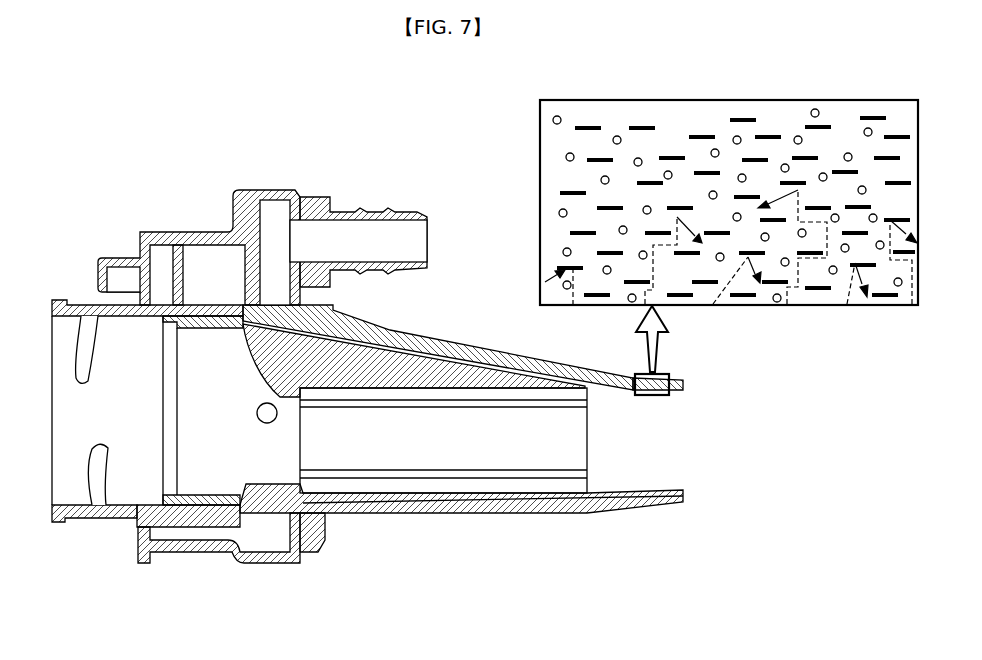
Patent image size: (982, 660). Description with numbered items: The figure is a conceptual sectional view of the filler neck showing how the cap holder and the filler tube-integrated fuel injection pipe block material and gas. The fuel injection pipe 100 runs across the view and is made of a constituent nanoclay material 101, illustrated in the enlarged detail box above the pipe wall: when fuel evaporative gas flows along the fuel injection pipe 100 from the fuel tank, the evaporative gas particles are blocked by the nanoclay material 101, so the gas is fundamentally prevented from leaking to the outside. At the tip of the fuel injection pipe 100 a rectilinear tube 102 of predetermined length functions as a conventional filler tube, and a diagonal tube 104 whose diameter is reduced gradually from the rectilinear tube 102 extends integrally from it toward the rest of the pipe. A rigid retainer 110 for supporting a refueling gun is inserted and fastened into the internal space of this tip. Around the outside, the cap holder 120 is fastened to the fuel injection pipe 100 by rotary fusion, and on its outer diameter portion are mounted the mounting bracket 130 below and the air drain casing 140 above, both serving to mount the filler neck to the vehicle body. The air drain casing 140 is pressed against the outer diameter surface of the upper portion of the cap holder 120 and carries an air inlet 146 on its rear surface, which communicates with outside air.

The fuel injection pipe 100 is at (427, 514).
The nanoclay material 101 is at (742, 306).
The rectilinear tube 102 is at (212, 513).
The diagonal tube 104 is at (420, 330).
The retainer 110 is at (185, 463).
The cap holder 120 is at (90, 305).
The mounting bracket 130 is at (277, 540).
The air drain casing 140 is at (194, 232).
The air inlet 146 is at (395, 210).